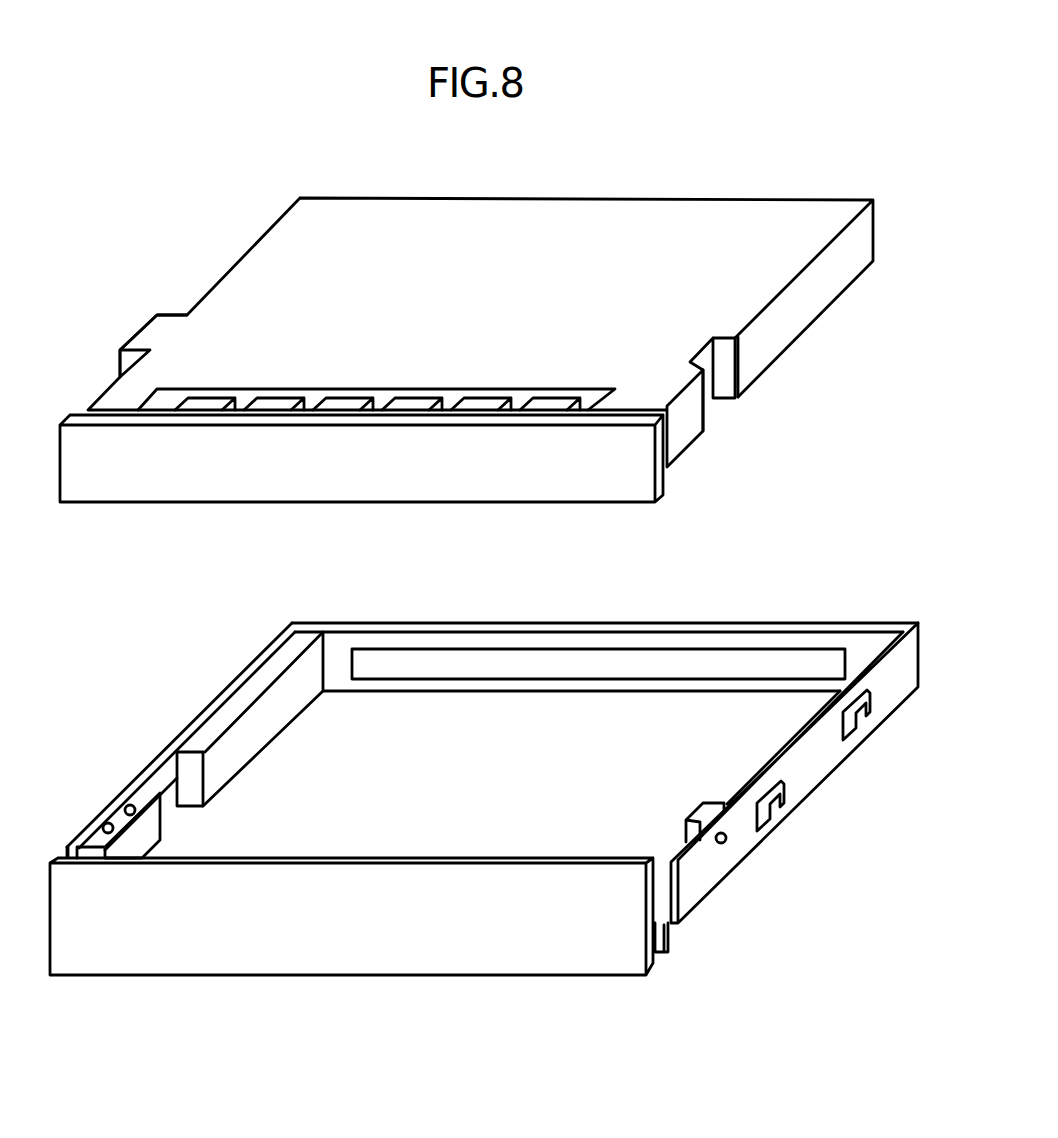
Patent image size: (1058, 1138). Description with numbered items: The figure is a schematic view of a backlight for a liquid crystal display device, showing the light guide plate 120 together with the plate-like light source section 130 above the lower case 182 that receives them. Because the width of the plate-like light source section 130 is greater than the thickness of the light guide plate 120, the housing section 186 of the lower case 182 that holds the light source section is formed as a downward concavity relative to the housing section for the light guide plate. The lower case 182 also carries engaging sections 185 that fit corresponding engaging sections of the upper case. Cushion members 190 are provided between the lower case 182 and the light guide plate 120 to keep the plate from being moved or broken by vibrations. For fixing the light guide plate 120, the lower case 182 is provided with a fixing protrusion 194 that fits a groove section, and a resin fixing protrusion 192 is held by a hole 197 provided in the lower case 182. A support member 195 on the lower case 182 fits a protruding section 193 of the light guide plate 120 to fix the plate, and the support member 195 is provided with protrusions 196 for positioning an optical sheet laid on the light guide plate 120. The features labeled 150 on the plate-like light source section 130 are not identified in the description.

The light guide plate 120 is at (762, 340).
The plate-like light source section 130 is at (288, 470).
The connector terminals 150 is at (418, 410).
The lower case 182 is at (713, 872).
The engaging sections 185 is at (783, 815).
The housing section 186 is at (670, 947).
The cushion member 190 is at (542, 657).
The fixing protrusion 192 is at (715, 400).
The protruding section 193 is at (166, 333).
The fixing protrusion 194 is at (685, 818).
The support member 195 is at (258, 728).
The protrusions 196 is at (143, 813).
The hole 197 is at (730, 835).